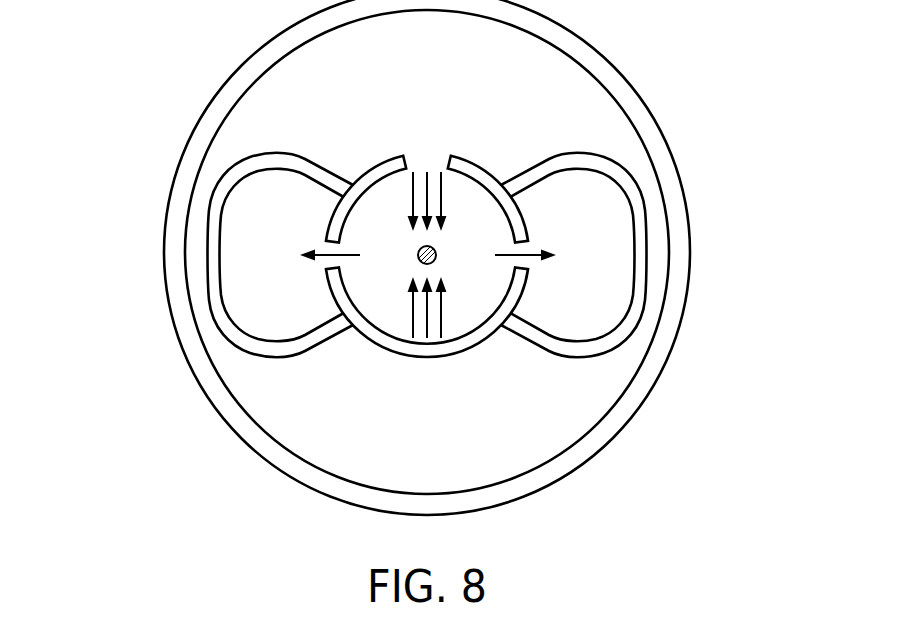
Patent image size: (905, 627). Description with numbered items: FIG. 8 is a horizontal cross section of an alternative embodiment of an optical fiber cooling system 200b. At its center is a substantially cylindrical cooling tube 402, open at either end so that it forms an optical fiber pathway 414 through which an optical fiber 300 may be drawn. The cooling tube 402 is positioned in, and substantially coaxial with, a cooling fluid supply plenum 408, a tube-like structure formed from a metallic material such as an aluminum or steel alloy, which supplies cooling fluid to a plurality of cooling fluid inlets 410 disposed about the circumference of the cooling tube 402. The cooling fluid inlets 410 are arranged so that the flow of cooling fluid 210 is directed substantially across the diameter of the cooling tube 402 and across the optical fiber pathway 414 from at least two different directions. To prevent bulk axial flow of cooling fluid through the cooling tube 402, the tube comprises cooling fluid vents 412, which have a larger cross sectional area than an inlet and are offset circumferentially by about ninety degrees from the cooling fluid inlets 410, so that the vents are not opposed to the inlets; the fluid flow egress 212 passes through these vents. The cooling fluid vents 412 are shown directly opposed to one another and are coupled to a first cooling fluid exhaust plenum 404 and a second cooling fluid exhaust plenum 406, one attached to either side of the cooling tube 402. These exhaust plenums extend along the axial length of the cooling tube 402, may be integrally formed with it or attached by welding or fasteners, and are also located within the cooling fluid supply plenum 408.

The optical fiber cooling system 200b is at (376, 257).
The cooling fluid supply plenum 408 is at (623, 77).
The second cooling fluid exhaust plenum 406 is at (277, 353).
The first cooling fluid exhaust plenum 404 is at (572, 353).
The cooling tube 402 is at (473, 160).
The optical fiber 300 is at (437, 247).
The cooling fluid inlets 410 is at (453, 141).
The flow of cooling fluid 210 is at (412, 195).
The fluid flow egress 212 is at (352, 257).
The cooling fluid vents 412 is at (431, 228).
The optical fiber pathway 414 is at (356, 195).